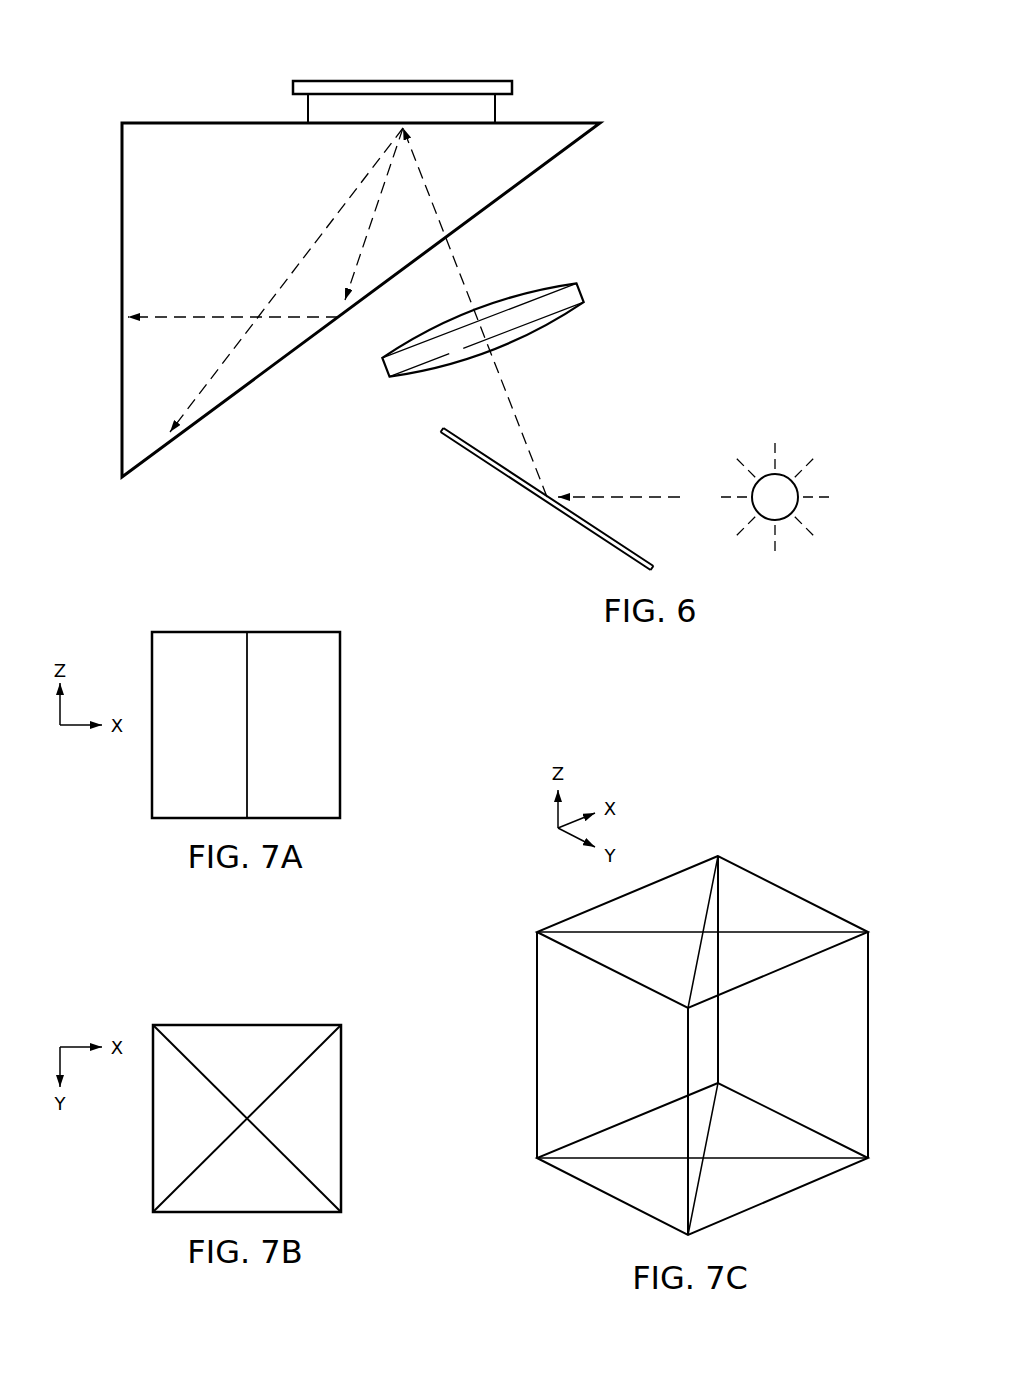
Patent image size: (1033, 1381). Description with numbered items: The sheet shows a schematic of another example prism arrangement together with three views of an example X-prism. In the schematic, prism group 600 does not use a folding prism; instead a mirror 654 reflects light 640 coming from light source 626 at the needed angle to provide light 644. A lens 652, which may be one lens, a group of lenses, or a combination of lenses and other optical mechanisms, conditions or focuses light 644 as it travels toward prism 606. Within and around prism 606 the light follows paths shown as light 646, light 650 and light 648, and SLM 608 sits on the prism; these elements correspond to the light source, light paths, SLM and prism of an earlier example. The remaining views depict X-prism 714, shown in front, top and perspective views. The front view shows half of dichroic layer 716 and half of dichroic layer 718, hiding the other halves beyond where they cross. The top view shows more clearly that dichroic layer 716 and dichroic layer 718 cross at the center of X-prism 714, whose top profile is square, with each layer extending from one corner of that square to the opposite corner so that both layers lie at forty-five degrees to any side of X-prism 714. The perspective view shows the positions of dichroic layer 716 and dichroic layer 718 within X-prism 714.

In FIG. 6, the prism group 600 is at (673, 48).
In FIG. 6, the prism 606 is at (203, 132).
In FIG. 6, the SLM 608 is at (402, 80).
In FIG. 6, the light source 626 is at (780, 520).
In FIG. 6, the light 640 is at (645, 497).
In FIG. 6, the light 644 is at (430, 192).
In FIG. 6, the light 646 is at (383, 182).
In FIG. 6, the light 648 is at (197, 313).
In FIG. 6, the light 650 is at (327, 222).
In FIG. 6, the lens 652 is at (600, 290).
In FIG. 6, the mirror 654 is at (545, 500).
In FIG. 7A, the X-prism 714 is at (199, 640).
In FIG. 7B, the X-prism 714 is at (245, 1032).
In FIG. 7C, the X-prism 714 is at (782, 903).
In FIG. 7A, the dichroic layer 716 is at (272, 741).
In FIG. 7B, the dichroic layer 716 is at (315, 1188).
In FIG. 7C, the dichroic layer 716 is at (815, 1163).
In FIG. 7A, the dichroic layer 718 is at (179, 741).
In FIG. 7B, the dichroic layer 718 is at (180, 1188).
In FIG. 7C, the dichroic layer 718 is at (696, 1197).